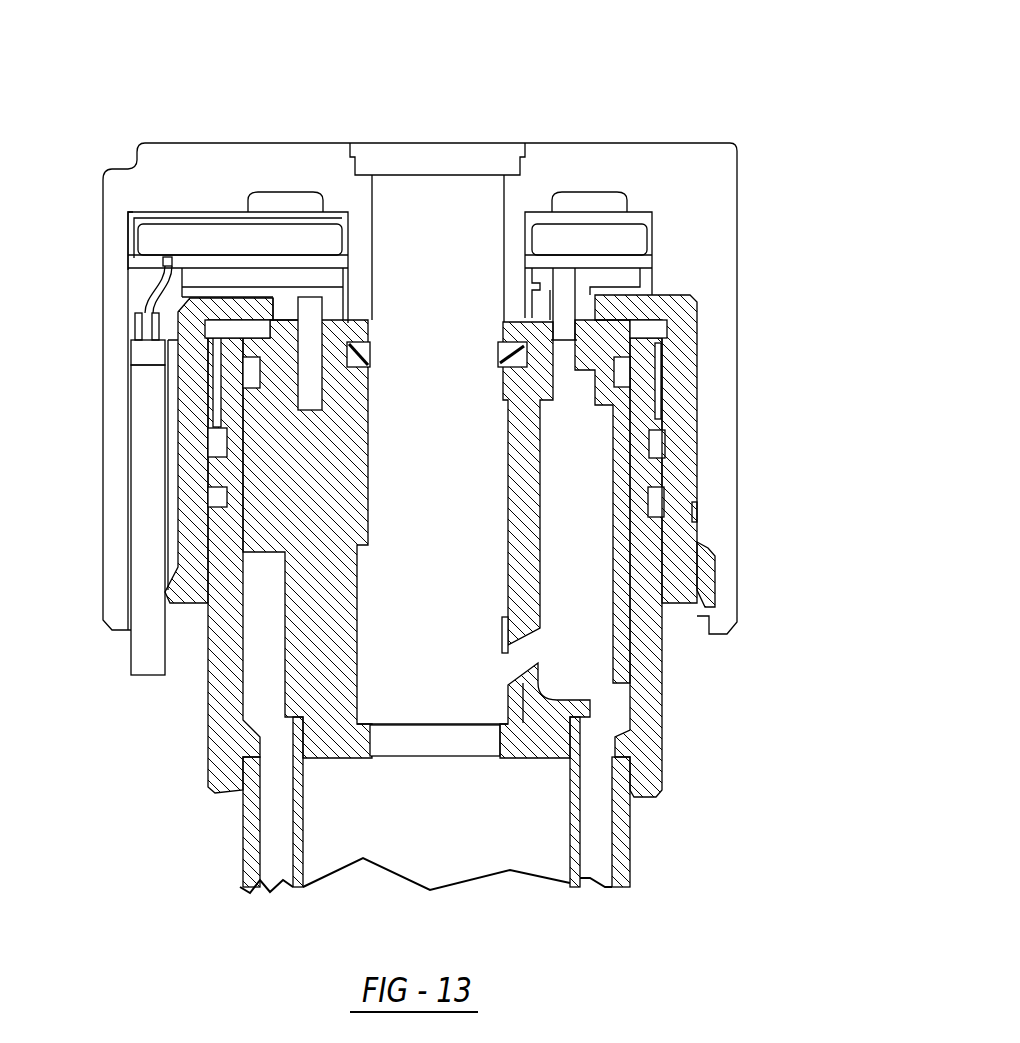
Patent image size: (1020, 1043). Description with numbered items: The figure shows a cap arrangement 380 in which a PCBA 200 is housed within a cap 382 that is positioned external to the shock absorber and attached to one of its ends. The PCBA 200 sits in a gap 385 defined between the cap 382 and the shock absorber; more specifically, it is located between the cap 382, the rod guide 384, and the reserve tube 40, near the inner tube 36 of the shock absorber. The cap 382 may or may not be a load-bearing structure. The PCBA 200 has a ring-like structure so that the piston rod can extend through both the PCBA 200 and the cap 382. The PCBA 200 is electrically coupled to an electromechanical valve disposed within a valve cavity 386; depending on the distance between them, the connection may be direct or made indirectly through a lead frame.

The cap arrangement 380 is at (568, 98).
The PCBA 200 is at (603, 250).
The gap 385 is at (155, 238).
The cap 382 is at (737, 249).
The rod guide 384 is at (283, 495).
The valve cavity 386 is at (573, 587).
The inner tube 36 is at (568, 807).
The reserve tube 40 is at (632, 838).